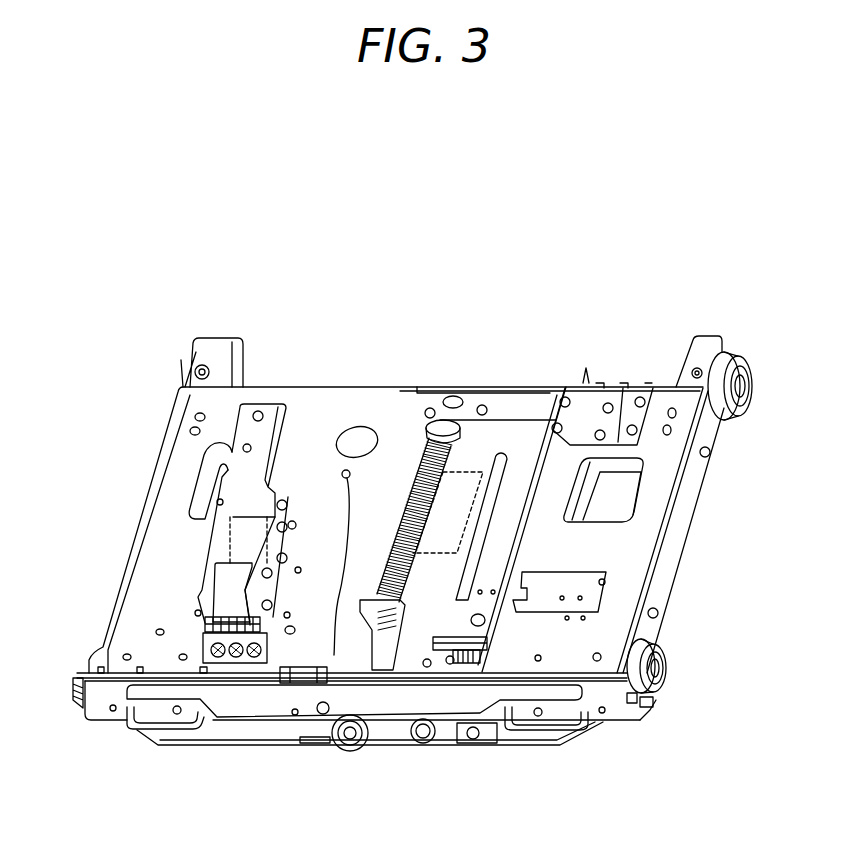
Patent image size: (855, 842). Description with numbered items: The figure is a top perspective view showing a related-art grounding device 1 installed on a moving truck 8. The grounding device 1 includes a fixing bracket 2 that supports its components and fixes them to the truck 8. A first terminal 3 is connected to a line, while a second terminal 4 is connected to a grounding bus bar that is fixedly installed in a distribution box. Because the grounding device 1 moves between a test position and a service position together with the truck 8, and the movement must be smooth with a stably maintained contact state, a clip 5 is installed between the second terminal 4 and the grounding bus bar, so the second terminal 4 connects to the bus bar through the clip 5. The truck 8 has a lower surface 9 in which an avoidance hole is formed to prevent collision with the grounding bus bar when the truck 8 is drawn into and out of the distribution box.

The grounding device 1 is at (282, 400).
The fixing bracket 2 is at (213, 550).
The first terminal 3 is at (233, 468).
The second terminal 4 is at (230, 587).
The clip 5 is at (215, 632).
The truck 8 is at (390, 405).
The lower surface 9 is at (512, 435).